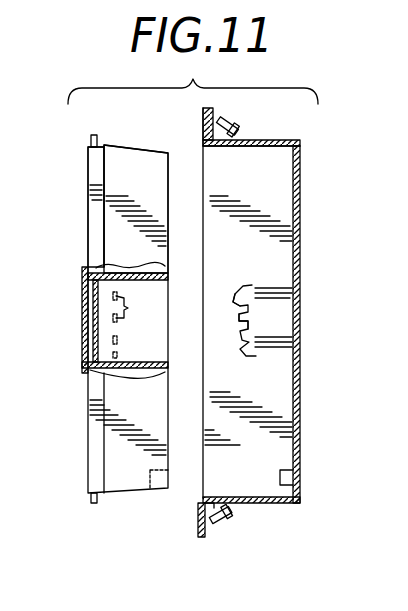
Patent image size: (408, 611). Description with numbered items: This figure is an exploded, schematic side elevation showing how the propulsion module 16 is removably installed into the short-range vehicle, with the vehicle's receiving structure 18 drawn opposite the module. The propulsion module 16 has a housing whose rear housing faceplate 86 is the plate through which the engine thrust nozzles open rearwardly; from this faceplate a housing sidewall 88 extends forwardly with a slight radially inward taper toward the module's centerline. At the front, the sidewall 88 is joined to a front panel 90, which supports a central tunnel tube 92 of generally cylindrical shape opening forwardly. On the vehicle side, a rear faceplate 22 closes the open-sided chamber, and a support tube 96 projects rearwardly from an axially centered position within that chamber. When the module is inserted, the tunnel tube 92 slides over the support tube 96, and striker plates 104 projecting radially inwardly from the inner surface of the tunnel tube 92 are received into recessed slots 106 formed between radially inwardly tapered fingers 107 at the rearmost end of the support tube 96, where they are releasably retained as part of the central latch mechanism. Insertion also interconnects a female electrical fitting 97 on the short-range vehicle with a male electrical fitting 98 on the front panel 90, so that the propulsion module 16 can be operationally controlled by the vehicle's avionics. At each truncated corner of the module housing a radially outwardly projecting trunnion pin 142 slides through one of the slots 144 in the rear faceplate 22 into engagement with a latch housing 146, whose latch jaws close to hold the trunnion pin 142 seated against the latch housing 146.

The propulsion module 16 is at (80, 420).
The housing 18 is at (300, 195).
The rear faceplate 22 is at (205, 537).
The rear housing faceplate 86 is at (88, 197).
The housing sidewall 88 is at (140, 153).
The front panel 90 is at (168, 273).
The central tunnel tube 92 is at (130, 263).
The support tube 96 is at (254, 285).
The female electrical fitting 97 is at (292, 470).
The male electrical fitting 98 is at (150, 490).
The striker plates 104 is at (124, 306).
The recessed slots 106 is at (248, 322).
The radially inwardly tapered fingers 107 is at (246, 300).
The trunnion pin 142 is at (97, 136).
The slots 144 is at (208, 150).
The latch housing 146 is at (240, 125).